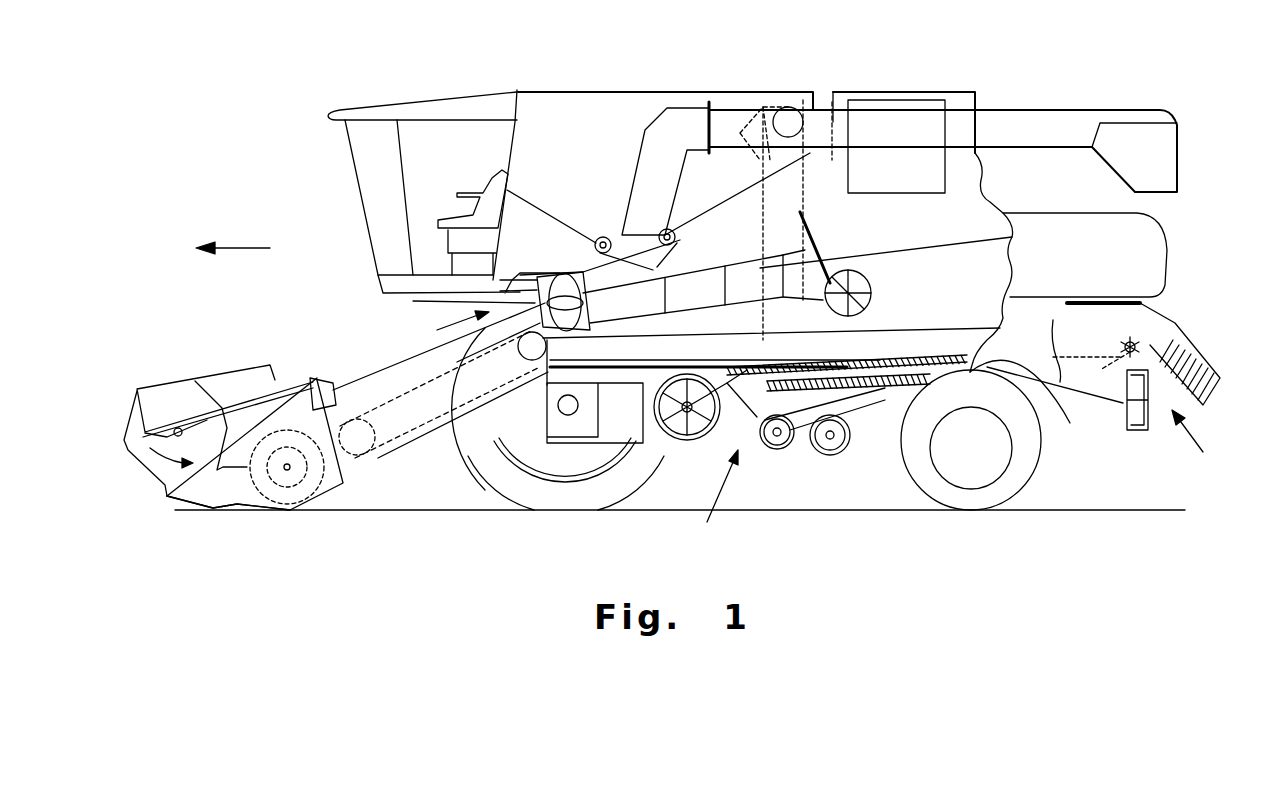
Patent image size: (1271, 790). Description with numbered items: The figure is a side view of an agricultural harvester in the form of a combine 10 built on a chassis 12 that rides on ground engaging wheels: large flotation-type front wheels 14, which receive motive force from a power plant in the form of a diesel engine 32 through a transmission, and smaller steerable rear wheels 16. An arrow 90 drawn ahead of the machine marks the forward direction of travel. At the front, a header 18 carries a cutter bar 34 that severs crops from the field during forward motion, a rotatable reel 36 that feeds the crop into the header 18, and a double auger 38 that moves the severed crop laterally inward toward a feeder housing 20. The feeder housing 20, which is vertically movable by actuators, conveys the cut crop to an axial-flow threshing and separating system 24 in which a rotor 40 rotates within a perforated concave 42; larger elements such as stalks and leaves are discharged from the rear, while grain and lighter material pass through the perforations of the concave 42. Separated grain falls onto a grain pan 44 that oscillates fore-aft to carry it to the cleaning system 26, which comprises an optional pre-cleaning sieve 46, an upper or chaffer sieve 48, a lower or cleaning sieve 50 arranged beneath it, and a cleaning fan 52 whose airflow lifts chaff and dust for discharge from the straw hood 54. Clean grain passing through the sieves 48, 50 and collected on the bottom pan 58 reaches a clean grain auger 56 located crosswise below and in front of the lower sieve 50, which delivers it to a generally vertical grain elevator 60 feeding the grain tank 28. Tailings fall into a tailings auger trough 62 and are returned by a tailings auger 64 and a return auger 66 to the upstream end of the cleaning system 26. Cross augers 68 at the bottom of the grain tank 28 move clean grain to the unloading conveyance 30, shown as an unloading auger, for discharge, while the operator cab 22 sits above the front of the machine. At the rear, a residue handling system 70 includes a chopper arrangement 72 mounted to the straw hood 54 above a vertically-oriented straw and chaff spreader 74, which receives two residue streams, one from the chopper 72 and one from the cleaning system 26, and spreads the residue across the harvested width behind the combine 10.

The combine 10 is at (413, 83).
The chassis 12 is at (1050, 408).
The front wheels 14 is at (487, 477).
The rear wheels 16 is at (1040, 465).
The header 18 is at (208, 358).
The feeder housing 20 is at (393, 367).
The operator cab 22 is at (353, 182).
The threshing and separating system 24 is at (453, 328).
The cleaning system 26 is at (714, 498).
The grain tank 28 is at (563, 93).
The unloading conveyance 30 is at (1055, 117).
The diesel engine 32 is at (888, 100).
The cutter bar 34 is at (230, 510).
The rotatable reel 36 is at (130, 447).
The double auger 38 is at (287, 493).
The rotor 40 is at (552, 267).
The perforated concave 42 is at (722, 260).
The grain pan 44 is at (538, 377).
The pre-cleaning sieve 46 is at (810, 360).
The upper sieve 48 is at (897, 357).
The lower sieve 50 is at (862, 400).
The cleaning fan 52 is at (685, 433).
The straw hood 54 is at (1150, 247).
The clean grain auger 56 is at (780, 453).
The bottom pan 58 is at (895, 393).
The grain elevator 60 is at (808, 198).
The tailings auger trough 62 is at (880, 395).
The tailings auger 64 is at (823, 460).
The return auger 66 is at (780, 337).
The cross augers 68 is at (602, 240).
The residue handling system 70 is at (1187, 321).
The chopper arrangement 72 is at (1112, 330).
The straw and chaff spreader 74 is at (1199, 441).
The forward travel direction arrow 90 is at (238, 248).